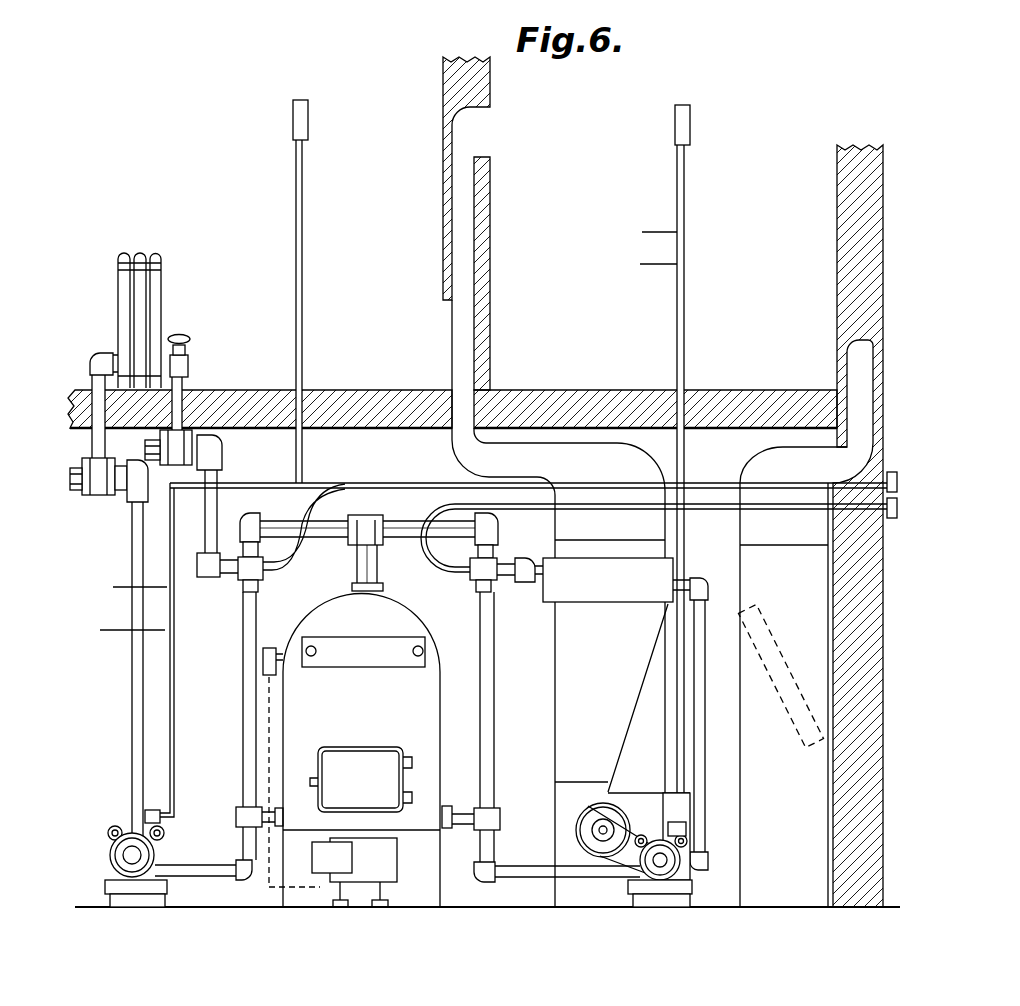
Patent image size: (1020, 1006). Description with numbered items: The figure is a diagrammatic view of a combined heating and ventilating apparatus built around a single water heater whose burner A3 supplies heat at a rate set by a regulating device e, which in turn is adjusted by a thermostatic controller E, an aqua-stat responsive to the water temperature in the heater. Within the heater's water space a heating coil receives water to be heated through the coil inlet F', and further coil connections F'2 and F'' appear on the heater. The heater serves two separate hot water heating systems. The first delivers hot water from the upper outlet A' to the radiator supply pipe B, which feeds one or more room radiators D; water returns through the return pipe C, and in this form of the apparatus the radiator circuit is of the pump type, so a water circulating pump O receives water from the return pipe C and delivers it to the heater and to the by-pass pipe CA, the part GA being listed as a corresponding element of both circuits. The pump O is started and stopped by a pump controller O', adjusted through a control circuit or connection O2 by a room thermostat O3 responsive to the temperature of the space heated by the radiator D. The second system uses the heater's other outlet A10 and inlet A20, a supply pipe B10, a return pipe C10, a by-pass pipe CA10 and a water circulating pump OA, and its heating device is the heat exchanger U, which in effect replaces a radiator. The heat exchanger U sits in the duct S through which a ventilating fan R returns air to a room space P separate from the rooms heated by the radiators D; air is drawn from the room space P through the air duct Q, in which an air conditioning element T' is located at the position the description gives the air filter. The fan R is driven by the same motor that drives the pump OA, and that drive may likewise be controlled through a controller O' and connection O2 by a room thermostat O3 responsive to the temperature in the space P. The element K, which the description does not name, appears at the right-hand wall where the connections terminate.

The duct S is at (566, 482).
The room space P is at (619, 222).
The air duct Q is at (793, 677).
The damper T' is at (780, 675).
The room thermostat O3 is at (310, 122).
The control circuit or connection O2 is at (303, 340).
The pipe bracket K is at (897, 505).
The radiator D is at (163, 270).
The return pipe C is at (82, 495).
The radiator supply pipe B is at (160, 450).
The upper outlet A' is at (367, 553).
The heater outlet A10 is at (405, 541).
The connecting part GA is at (230, 580).
The supply pipe B10 is at (529, 510).
The by-pass pipe CA is at (242, 708).
The coil inlet F' is at (363, 637).
The bolt F'2 is at (321, 673).
The bolt F'' is at (410, 673).
The burner A3 is at (363, 872).
The regulating device e is at (332, 857).
The thermostatic controller E is at (263, 660).
The heater inlet A20 is at (463, 806).
The by-pass pipe CA10 is at (496, 737).
The heat exchanger U is at (608, 580).
The return pipe C10 is at (708, 748).
The ventilating fan R is at (603, 833).
The water circulating pump OA is at (663, 880).
The water circulating pump O is at (136, 886).
The pump controller O' is at (415, 807).